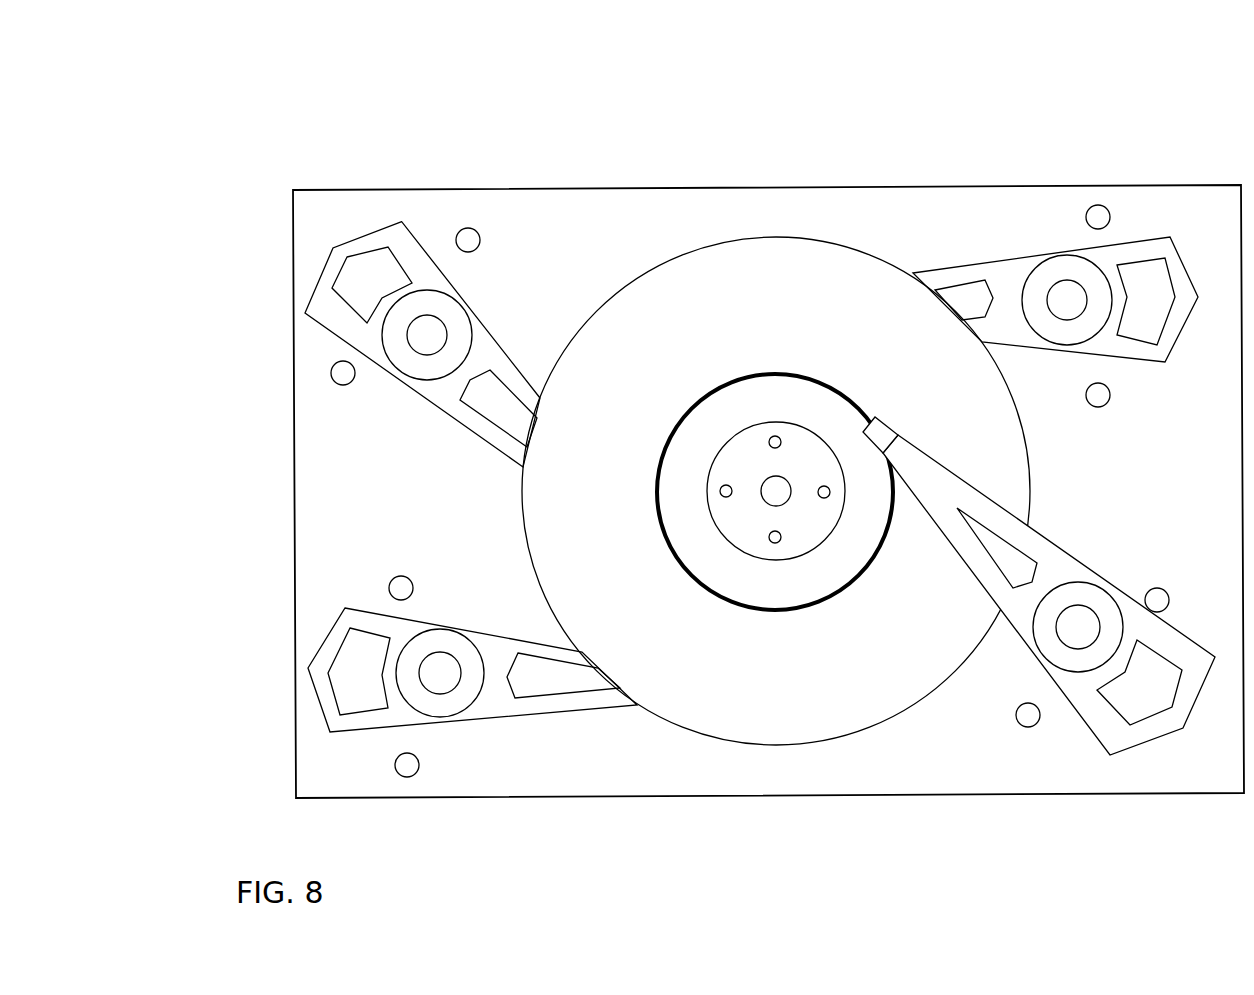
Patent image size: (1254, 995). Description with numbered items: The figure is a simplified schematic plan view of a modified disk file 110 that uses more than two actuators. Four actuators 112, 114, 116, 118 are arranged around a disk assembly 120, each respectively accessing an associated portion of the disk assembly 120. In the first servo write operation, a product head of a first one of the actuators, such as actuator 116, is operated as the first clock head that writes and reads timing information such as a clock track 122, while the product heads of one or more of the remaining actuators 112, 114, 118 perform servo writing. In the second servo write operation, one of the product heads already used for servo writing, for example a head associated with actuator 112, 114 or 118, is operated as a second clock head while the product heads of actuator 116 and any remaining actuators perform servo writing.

The disk file 110 is at (312, 157).
The actuator 112 is at (485, 325).
The actuator 114 is at (968, 262).
The actuator 116 is at (1040, 533).
The actuator 118 is at (520, 718).
The disk assembly 120 is at (871, 750).
The clock track 122 is at (783, 613).